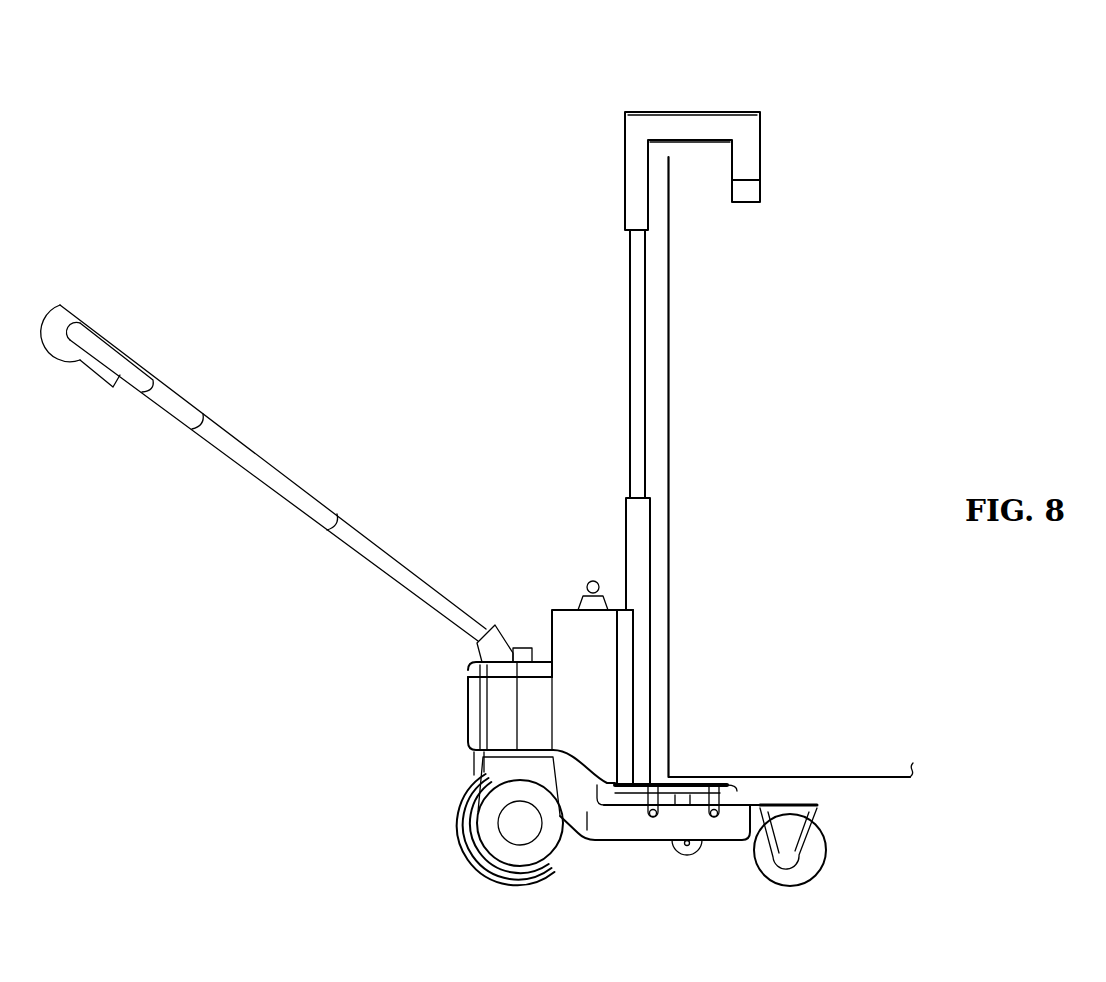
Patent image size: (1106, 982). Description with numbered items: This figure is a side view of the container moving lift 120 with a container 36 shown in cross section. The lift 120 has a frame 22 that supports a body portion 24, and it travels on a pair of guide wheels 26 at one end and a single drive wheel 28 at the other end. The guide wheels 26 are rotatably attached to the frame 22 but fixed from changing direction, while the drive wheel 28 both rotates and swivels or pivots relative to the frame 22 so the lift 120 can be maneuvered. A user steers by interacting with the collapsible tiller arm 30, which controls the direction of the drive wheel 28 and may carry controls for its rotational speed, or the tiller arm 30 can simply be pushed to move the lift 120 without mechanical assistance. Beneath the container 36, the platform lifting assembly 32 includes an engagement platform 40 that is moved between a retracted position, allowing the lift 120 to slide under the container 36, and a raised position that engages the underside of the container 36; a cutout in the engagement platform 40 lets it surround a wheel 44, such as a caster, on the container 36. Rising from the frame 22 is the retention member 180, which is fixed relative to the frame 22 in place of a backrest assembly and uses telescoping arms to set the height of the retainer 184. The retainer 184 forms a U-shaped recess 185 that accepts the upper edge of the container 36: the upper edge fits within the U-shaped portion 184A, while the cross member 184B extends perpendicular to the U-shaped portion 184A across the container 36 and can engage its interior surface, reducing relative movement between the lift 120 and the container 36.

The retainer 184 is at (726, 94).
The U-shaped portion 184A is at (688, 118).
The cross member 184B is at (756, 190).
The U-shaped recess 185 is at (692, 190).
The retention member 180 is at (588, 307).
The container 36 is at (683, 438).
The body portion 24 is at (528, 708).
The tiller arm 30 is at (257, 480).
The lift 120 is at (443, 653).
The drive wheel 28 is at (470, 862).
The frame 22 is at (628, 835).
The wheel 44 is at (692, 854).
The platform lifting assembly 32 is at (748, 794).
The engagement platform 40 is at (697, 783).
The guide wheels 26 is at (815, 870).